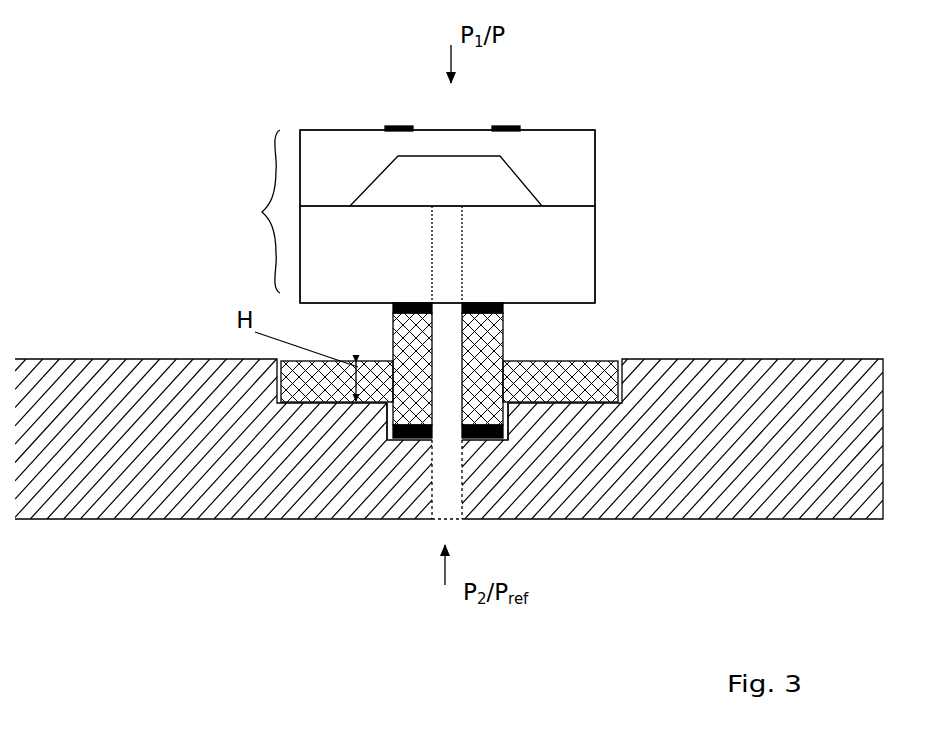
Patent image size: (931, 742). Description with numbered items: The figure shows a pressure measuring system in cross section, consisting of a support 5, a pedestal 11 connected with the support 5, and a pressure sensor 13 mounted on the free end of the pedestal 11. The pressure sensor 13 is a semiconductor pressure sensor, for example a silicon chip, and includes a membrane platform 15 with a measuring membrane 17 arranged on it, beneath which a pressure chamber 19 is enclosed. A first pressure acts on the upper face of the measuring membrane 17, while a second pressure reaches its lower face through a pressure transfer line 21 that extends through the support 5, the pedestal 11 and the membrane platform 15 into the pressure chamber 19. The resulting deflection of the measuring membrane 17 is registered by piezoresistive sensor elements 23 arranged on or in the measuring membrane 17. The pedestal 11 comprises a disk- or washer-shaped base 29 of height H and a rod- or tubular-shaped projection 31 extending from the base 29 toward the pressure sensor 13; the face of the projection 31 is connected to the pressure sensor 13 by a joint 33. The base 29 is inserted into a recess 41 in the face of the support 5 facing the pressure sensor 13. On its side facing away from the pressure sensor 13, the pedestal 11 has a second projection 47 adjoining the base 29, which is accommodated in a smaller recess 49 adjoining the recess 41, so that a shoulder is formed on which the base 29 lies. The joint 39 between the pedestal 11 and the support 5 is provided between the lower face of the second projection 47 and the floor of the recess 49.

The support 5 is at (807, 383).
The pedestal 11 is at (543, 346).
The pressure sensor 13 is at (409, 216).
The membrane platform 15 is at (568, 272).
The measuring membrane 17 is at (447, 143).
The pressure chamber 19 is at (436, 193).
The pressure transfer line 21 is at (447, 242).
The sensor elements 23 is at (405, 123).
The base 29 is at (317, 380).
The projection 31 is at (413, 333).
The joint 33 is at (392, 318).
The joint 39 is at (493, 438).
The recess 41 is at (624, 378).
The second projection 47 is at (414, 398).
The recess 49 is at (514, 430).